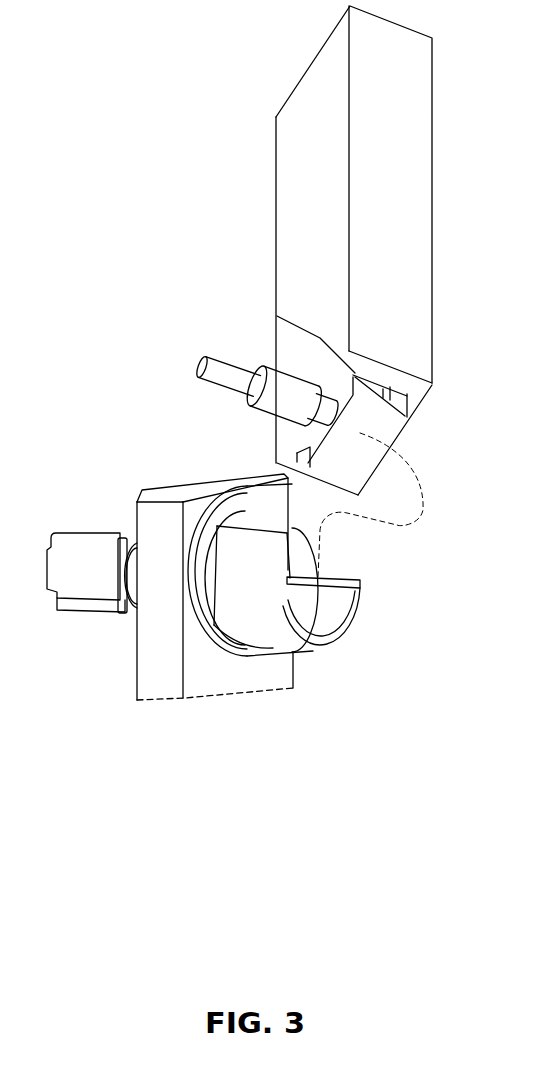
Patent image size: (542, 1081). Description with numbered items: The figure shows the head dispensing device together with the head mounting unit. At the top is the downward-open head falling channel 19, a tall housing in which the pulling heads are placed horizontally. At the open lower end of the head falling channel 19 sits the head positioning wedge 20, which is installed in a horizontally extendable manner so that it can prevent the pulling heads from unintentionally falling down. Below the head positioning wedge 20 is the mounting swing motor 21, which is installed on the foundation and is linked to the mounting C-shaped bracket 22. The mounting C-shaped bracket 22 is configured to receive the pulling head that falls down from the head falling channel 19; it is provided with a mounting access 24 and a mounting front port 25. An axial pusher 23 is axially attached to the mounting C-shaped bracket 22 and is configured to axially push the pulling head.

The head falling channel 19 is at (314, 148).
The head positioning wedge 20 is at (352, 373).
The mounting swing motor 21 is at (92, 560).
The mounting C-shaped bracket 22 is at (240, 591).
The axial pusher 23 is at (310, 576).
The mounting access 24 is at (283, 537).
The mounting front port 25 is at (362, 605).